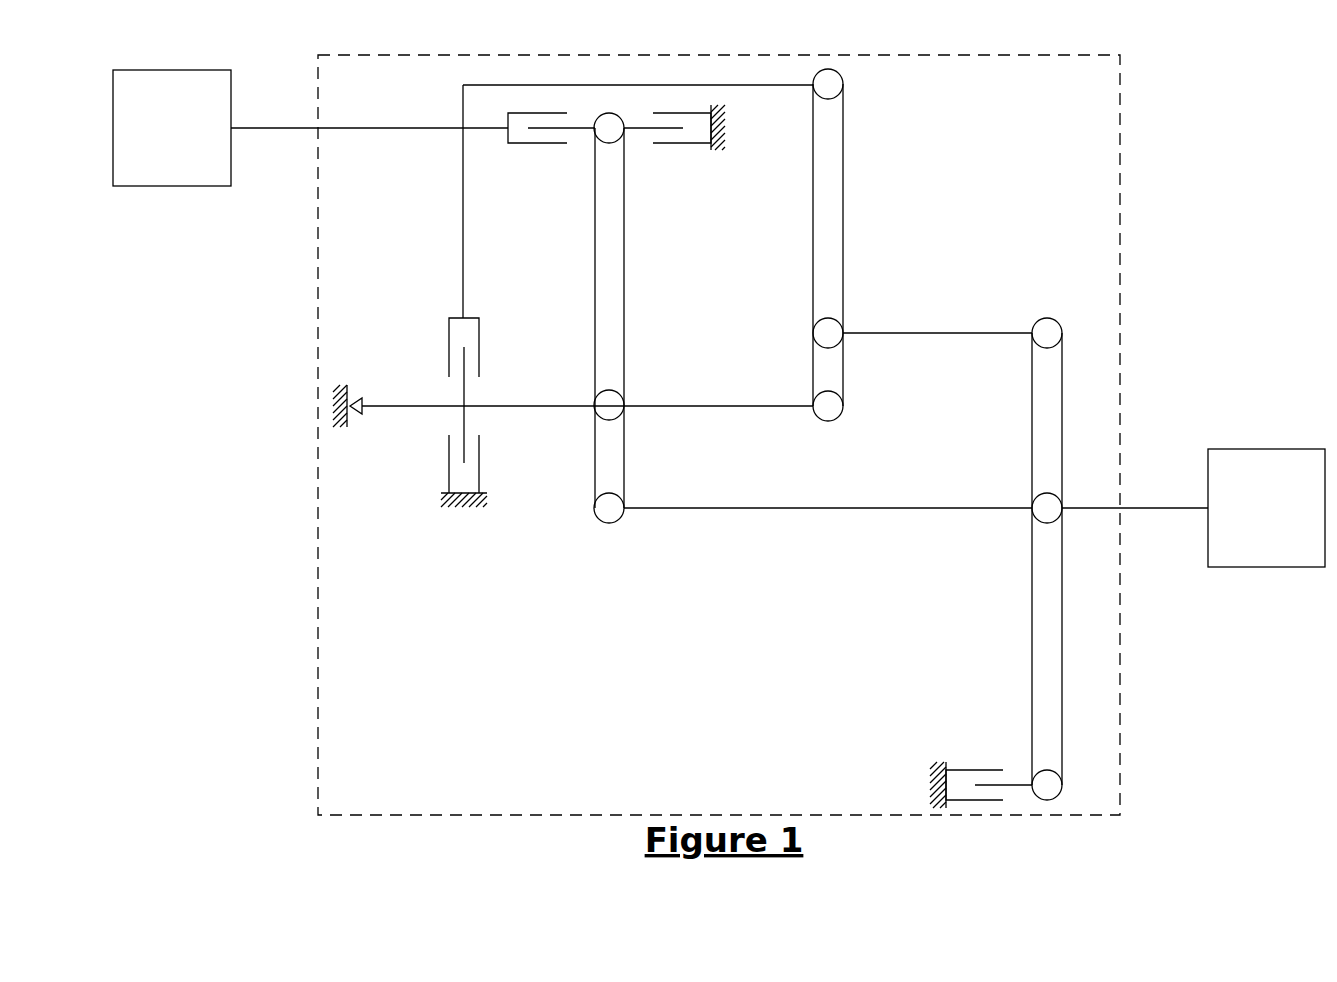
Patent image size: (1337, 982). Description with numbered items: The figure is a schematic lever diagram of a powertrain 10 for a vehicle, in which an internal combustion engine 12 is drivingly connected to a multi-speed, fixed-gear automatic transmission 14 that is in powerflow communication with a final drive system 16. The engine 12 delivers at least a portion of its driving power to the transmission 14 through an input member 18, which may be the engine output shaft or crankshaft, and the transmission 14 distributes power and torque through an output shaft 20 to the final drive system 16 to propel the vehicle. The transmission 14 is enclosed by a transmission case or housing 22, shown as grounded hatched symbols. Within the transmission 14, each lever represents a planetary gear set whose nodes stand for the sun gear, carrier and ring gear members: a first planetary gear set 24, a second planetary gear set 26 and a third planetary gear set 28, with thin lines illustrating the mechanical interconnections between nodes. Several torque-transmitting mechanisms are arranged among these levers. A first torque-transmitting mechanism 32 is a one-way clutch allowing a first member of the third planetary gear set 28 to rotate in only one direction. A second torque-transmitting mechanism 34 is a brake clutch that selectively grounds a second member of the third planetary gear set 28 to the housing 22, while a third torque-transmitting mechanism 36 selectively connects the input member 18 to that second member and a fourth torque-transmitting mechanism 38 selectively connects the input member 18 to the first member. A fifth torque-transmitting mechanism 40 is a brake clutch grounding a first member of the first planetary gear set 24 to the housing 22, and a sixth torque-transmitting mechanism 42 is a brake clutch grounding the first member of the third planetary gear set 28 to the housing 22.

The powertrain 10 is at (1258, 80).
The internal combustion engine 12 is at (172, 128).
The transmission 14 is at (1120, 205).
The final drive system 16 is at (1266, 508).
The input member 18 is at (289, 127).
The output shaft 20 is at (1157, 509).
The transmission case or housing 22 is at (727, 127).
The first planetary gear set 24 is at (1047, 280).
The second planetary gear set 26 is at (828, 430).
The third planetary gear set 28 is at (609, 550).
The first torque-transmitting mechanism 32 is at (358, 418).
The second torque-transmitting mechanism 34 is at (690, 144).
The third torque-transmitting mechanism 36 is at (537, 144).
The fourth torque-transmitting mechanism 38 is at (449, 343).
The fifth torque-transmitting mechanism 40 is at (975, 770).
The sixth torque-transmitting mechanism 42 is at (479, 459).